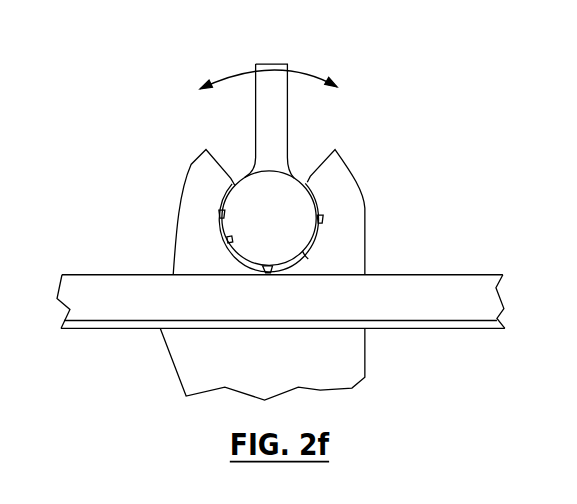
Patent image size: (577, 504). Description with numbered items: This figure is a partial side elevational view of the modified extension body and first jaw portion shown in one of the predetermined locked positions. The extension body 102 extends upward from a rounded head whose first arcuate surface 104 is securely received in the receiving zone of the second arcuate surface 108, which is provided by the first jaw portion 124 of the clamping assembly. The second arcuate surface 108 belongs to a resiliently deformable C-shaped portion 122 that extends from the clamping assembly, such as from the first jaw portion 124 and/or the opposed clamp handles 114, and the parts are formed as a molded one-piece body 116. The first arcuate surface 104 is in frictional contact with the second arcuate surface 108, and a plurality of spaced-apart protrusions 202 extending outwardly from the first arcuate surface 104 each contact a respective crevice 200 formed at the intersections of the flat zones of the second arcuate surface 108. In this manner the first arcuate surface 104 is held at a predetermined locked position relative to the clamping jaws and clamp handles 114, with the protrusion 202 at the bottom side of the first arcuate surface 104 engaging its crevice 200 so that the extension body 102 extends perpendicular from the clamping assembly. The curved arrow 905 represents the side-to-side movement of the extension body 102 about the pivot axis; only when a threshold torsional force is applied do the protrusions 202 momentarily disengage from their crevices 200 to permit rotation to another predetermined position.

The curved arrow 905 is at (300, 72).
The extension body 102 is at (285, 118).
The first arcuate surface 104 is at (284, 262).
The C-shaped portion 122 is at (202, 172).
The molded one-piece body 116 is at (286, 230).
The second arcuate surface 108 is at (222, 243).
The crevice 200 is at (302, 255).
The protrusions 202 is at (218, 215).
The opposed clamp handles 114 is at (287, 277).
The first jaw portion 124 is at (100, 295).